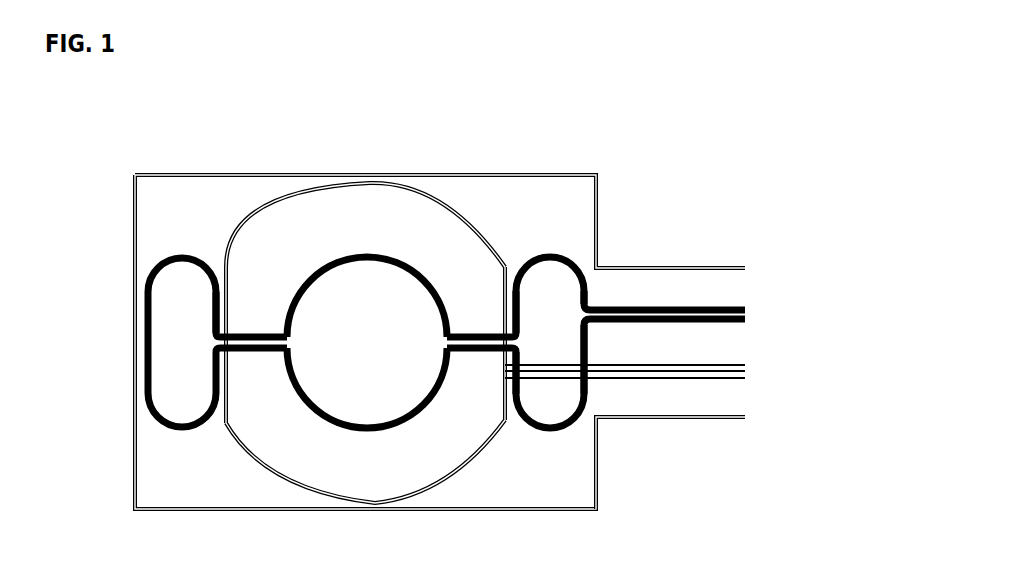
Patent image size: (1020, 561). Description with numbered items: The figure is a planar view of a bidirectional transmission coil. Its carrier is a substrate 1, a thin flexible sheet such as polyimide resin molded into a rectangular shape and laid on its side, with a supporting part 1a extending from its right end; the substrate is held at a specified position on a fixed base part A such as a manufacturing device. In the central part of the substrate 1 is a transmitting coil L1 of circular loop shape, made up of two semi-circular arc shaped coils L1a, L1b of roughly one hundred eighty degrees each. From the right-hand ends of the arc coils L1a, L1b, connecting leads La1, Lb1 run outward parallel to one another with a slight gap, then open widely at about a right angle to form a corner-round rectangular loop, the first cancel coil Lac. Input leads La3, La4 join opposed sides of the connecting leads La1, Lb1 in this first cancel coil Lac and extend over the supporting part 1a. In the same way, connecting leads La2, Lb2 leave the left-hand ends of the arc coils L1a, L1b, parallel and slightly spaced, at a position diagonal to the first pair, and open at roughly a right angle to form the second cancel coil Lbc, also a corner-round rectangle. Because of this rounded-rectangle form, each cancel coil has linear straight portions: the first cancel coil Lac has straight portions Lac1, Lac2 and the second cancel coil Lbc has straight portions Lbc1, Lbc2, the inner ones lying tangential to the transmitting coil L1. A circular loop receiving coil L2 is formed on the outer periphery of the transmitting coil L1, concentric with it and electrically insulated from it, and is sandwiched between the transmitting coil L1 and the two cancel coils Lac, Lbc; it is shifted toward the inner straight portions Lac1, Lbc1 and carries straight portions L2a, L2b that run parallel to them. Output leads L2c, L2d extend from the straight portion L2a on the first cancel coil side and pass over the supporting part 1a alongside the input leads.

The base part A is at (260, 549).
The substrate 1 is at (580, 213).
The supporting part 1a is at (650, 420).
The transmitting coil L1 is at (367, 317).
The semi-circular arc shaped coil L1a is at (372, 267).
The semi-circular arc shaped coil L1b is at (355, 422).
The receiving coil L2 is at (521, 321).
The straight portion L2a is at (500, 290).
The straight portion L2b is at (226, 281).
The output lead L2c is at (623, 377).
The output lead L2d is at (680, 365).
The connecting lead La1 is at (457, 337).
The connecting lead La2 is at (278, 335).
The input lead La3 is at (623, 320).
The input lead La4 is at (723, 322).
The connecting lead Lb1 is at (487, 347).
The connecting lead Lb2 is at (247, 345).
The first cancel coil Lac is at (654, 354).
The straight portion Lac1 is at (517, 320).
The straight portion Lac2 is at (583, 392).
The second cancel coil Lbc is at (197, 315).
The straight portion Lbc1 is at (215, 310).
The straight portion Lbc2 is at (150, 387).